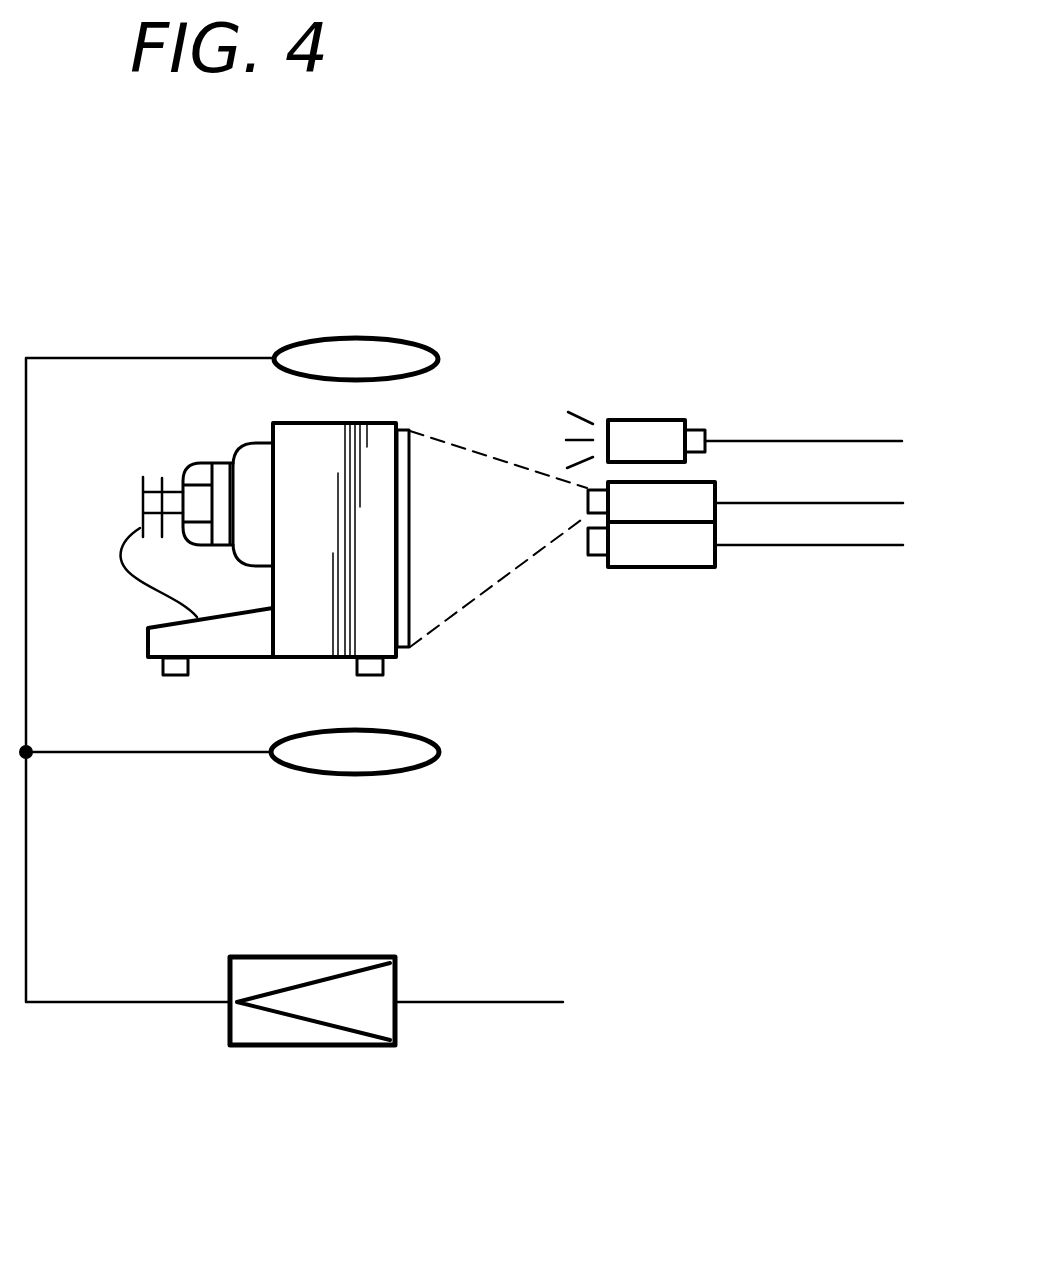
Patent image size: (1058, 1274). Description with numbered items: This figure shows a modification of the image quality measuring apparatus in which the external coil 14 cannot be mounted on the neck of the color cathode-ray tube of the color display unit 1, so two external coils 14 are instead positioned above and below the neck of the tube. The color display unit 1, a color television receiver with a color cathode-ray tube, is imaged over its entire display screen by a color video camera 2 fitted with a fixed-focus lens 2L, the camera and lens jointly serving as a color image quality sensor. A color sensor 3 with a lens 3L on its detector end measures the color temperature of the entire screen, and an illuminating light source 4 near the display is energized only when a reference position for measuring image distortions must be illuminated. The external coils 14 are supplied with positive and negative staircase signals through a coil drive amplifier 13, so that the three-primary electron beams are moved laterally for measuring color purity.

The color display unit 1 is at (303, 423).
The color video camera 2 is at (648, 502).
The fixed-focus lens 2L is at (587, 498).
The color sensor 3 is at (687, 550).
The lens 3L is at (588, 548).
The illuminating light source 4 is at (650, 425).
The coil drive amplifier 13 is at (317, 1050).
The external coil 14 is at (365, 337).